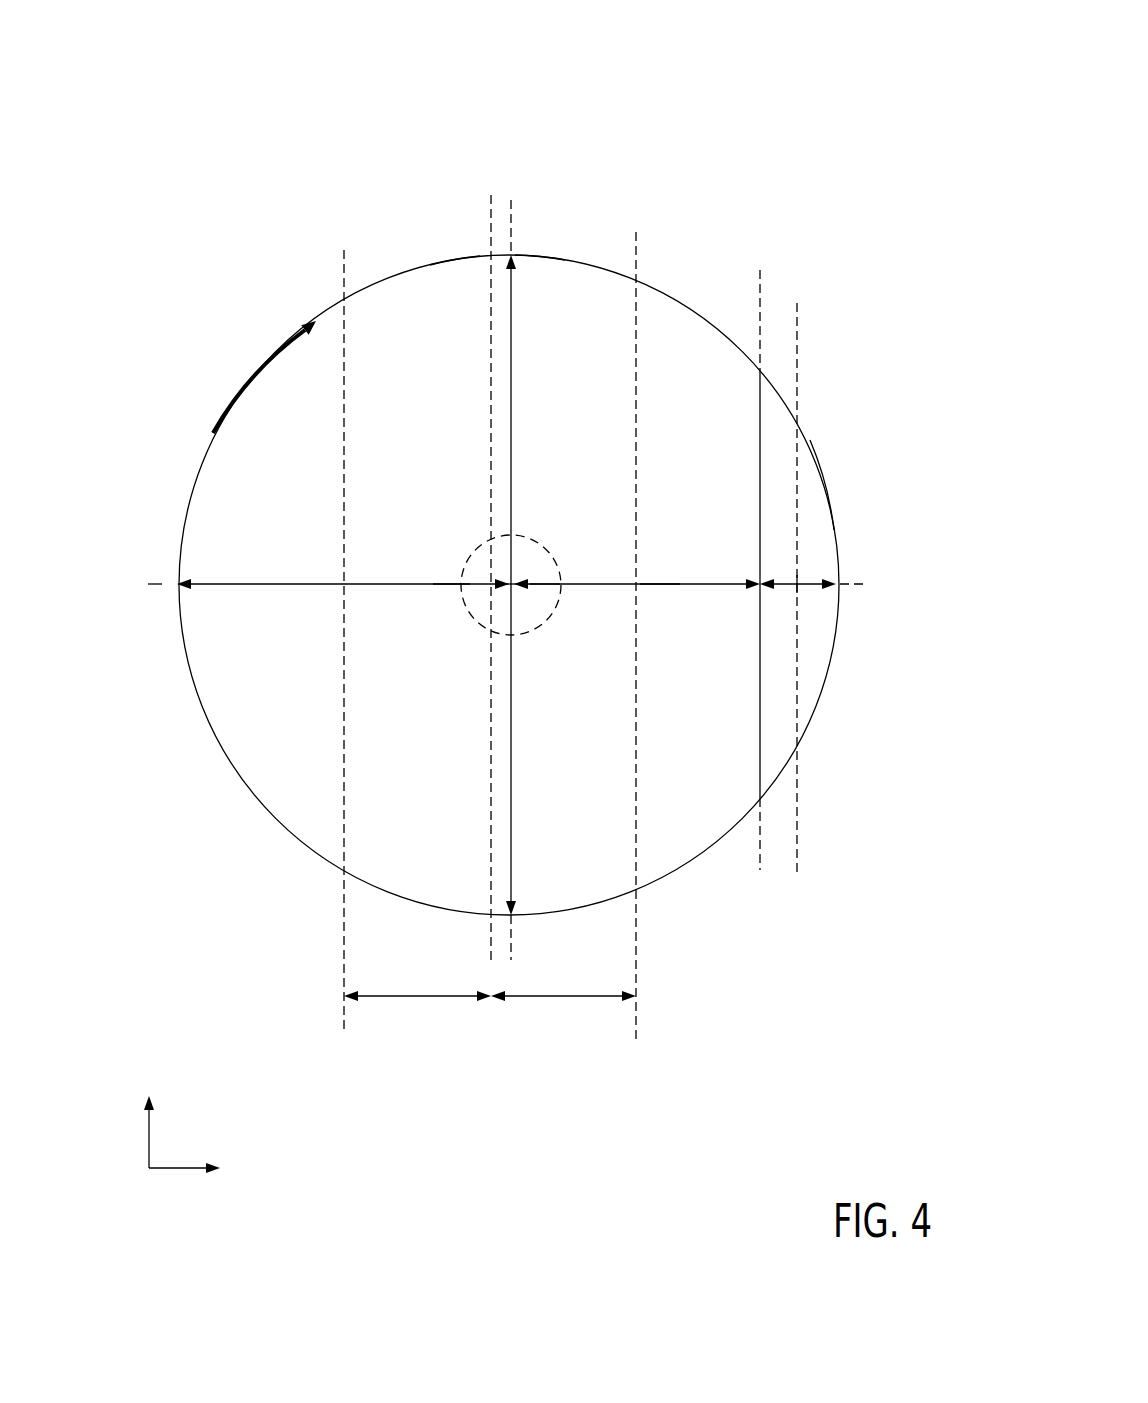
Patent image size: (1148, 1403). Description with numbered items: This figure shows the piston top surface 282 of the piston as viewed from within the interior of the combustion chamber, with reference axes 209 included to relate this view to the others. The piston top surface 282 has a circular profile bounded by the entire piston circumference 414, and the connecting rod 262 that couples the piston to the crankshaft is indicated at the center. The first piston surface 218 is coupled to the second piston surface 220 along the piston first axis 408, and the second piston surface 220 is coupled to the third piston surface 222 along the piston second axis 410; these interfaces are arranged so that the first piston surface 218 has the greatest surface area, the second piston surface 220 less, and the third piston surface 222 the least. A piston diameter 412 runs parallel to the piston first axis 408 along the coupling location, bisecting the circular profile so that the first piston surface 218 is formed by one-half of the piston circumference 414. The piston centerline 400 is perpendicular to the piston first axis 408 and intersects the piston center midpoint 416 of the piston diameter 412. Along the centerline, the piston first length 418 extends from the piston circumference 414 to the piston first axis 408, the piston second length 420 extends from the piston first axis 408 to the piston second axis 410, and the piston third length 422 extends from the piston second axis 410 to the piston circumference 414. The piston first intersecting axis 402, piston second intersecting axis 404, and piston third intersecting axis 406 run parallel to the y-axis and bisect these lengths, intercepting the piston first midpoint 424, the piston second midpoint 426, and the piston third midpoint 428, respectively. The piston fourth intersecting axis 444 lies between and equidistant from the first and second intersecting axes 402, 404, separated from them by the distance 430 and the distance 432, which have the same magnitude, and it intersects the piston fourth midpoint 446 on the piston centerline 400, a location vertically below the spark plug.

The piston top surface 282 is at (343, 88).
The piston fourth intersecting axis 444 is at (490, 255).
The piston first axis 408 is at (514, 190).
The first piston surface 218 is at (457, 257).
The second piston surface 220 is at (538, 255).
The piston second axis 410 is at (760, 270).
The piston circumference 414 is at (268, 352).
The piston second intersecting axis 404 is at (636, 410).
The piston first intersecting axis 402 is at (345, 482).
The connecting rod 262 is at (488, 537).
The third piston surface 222 is at (825, 498).
The piston third midpoint 428 is at (798, 583).
The piston centerline 400 is at (158, 583).
The piston fourth midpoint 446 is at (498, 582).
The piston first midpoint 424 is at (353, 586).
The piston first length 418 is at (433, 586).
The piston center midpoint 416 is at (532, 586).
The piston second length 420 is at (593, 586).
The piston second midpoint 426 is at (642, 586).
The piston third intersecting axis 406 is at (798, 685).
The piston third length 422 is at (812, 588).
The piston diameter 412 is at (510, 765).
The distance 430 is at (410, 997).
The distance 432 is at (557, 997).
The reference axes 209 is at (170, 1168).